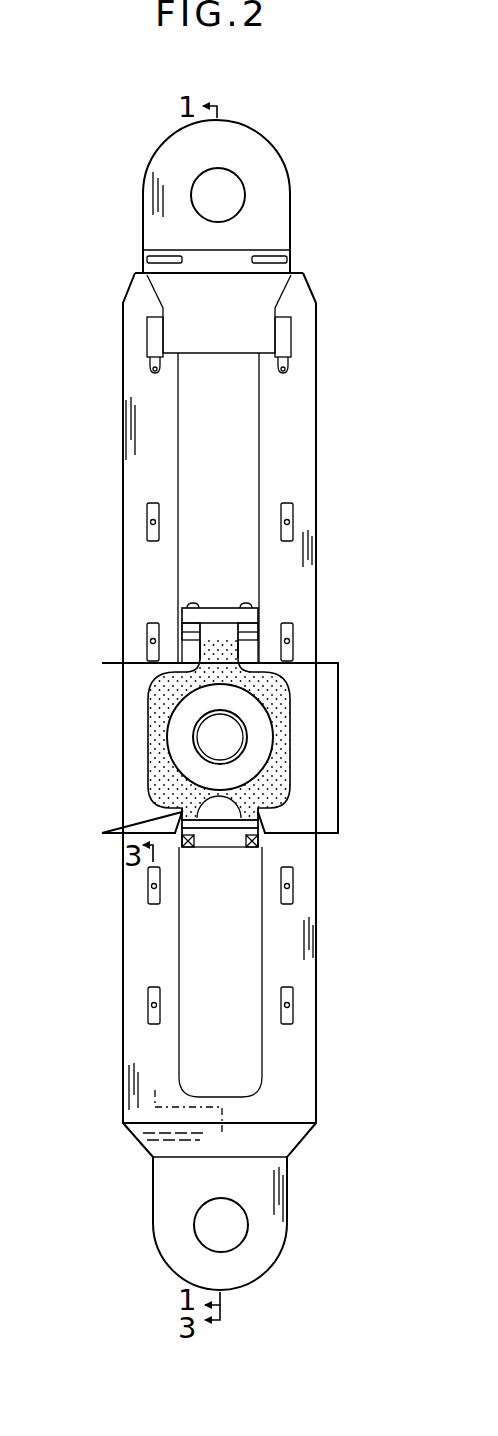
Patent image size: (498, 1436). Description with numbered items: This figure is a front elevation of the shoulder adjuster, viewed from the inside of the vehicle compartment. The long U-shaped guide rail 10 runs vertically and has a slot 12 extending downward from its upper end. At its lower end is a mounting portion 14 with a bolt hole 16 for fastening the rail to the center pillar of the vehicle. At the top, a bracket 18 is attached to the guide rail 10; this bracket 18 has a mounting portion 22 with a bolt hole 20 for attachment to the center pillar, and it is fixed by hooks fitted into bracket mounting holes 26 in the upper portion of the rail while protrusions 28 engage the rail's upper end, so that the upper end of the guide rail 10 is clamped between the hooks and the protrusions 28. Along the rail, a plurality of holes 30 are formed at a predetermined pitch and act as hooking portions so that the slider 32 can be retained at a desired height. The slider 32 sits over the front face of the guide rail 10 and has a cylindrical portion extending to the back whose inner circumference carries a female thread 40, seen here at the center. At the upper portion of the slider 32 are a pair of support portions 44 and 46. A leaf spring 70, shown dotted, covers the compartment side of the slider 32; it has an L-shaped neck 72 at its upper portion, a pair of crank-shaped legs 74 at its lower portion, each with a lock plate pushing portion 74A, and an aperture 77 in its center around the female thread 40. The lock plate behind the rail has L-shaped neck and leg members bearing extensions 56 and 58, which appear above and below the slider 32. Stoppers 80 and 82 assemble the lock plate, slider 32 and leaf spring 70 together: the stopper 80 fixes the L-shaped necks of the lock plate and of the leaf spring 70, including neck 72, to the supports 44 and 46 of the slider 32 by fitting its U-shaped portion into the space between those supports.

The guide rail 10 is at (300, 437).
The slot 12 is at (255, 464).
The mounting portion 14 is at (268, 1195).
The bolt hole 16 is at (237, 1242).
The bracket 18 is at (266, 136).
The bolt hole 20 is at (233, 183).
The mounting portion 22 is at (278, 211).
The bracket mounting holes 26 is at (158, 374).
The protrusions 28 is at (153, 261).
The holes 30 is at (150, 522).
The slider 32 is at (103, 783).
The female thread 40 is at (200, 722).
The support portion 44 is at (245, 603).
The support portion 46 is at (192, 606).
The extension 56 is at (262, 633).
The extension 58 is at (210, 828).
The leaf spring 70 is at (157, 707).
The L-shaped neck 72 is at (228, 650).
The legs 74 is at (250, 807).
The lock plate pushing portion 74A is at (247, 848).
The aperture 77 is at (280, 722).
The stopper 80 is at (210, 608).
The stopper 82 is at (227, 848).